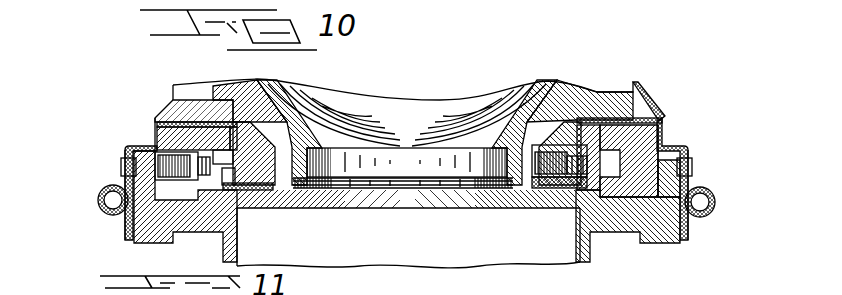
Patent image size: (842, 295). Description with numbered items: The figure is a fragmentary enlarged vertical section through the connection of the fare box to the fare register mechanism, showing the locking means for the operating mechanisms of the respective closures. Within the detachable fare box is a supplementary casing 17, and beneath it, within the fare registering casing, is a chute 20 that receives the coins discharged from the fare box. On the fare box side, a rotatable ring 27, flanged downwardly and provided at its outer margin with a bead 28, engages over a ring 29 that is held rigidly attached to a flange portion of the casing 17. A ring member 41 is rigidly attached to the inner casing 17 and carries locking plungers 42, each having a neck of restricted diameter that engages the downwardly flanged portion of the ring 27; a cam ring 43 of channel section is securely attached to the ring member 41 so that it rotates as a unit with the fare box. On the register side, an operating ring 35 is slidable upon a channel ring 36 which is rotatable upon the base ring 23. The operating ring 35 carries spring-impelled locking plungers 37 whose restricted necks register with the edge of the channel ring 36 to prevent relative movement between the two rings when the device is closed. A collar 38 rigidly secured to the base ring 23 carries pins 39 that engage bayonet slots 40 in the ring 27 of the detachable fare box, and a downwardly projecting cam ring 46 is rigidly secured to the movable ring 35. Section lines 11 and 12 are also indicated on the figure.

The section line 11- 11 is at (150, 122).
The section line 12- 12 is at (62, 150).
The supplementary casing 17 is at (540, 112).
The chute 20 is at (587, 240).
The base ring 23 is at (614, 215).
The rotatable ring 27 is at (139, 140).
The bead 28 is at (113, 216).
The ring 29 is at (220, 135).
The operating ring 35 is at (706, 198).
The channel ring 36 is at (655, 185).
The locking plungers 37 is at (180, 175).
The ring or collar 38 is at (130, 232).
The pins 39 is at (120, 173).
The bayonet slots 40 is at (104, 210).
The ring member 41 is at (292, 128).
The locking plungers 42 is at (573, 177).
The cam ring 43 is at (547, 188).
The cam ring 46 is at (182, 152).